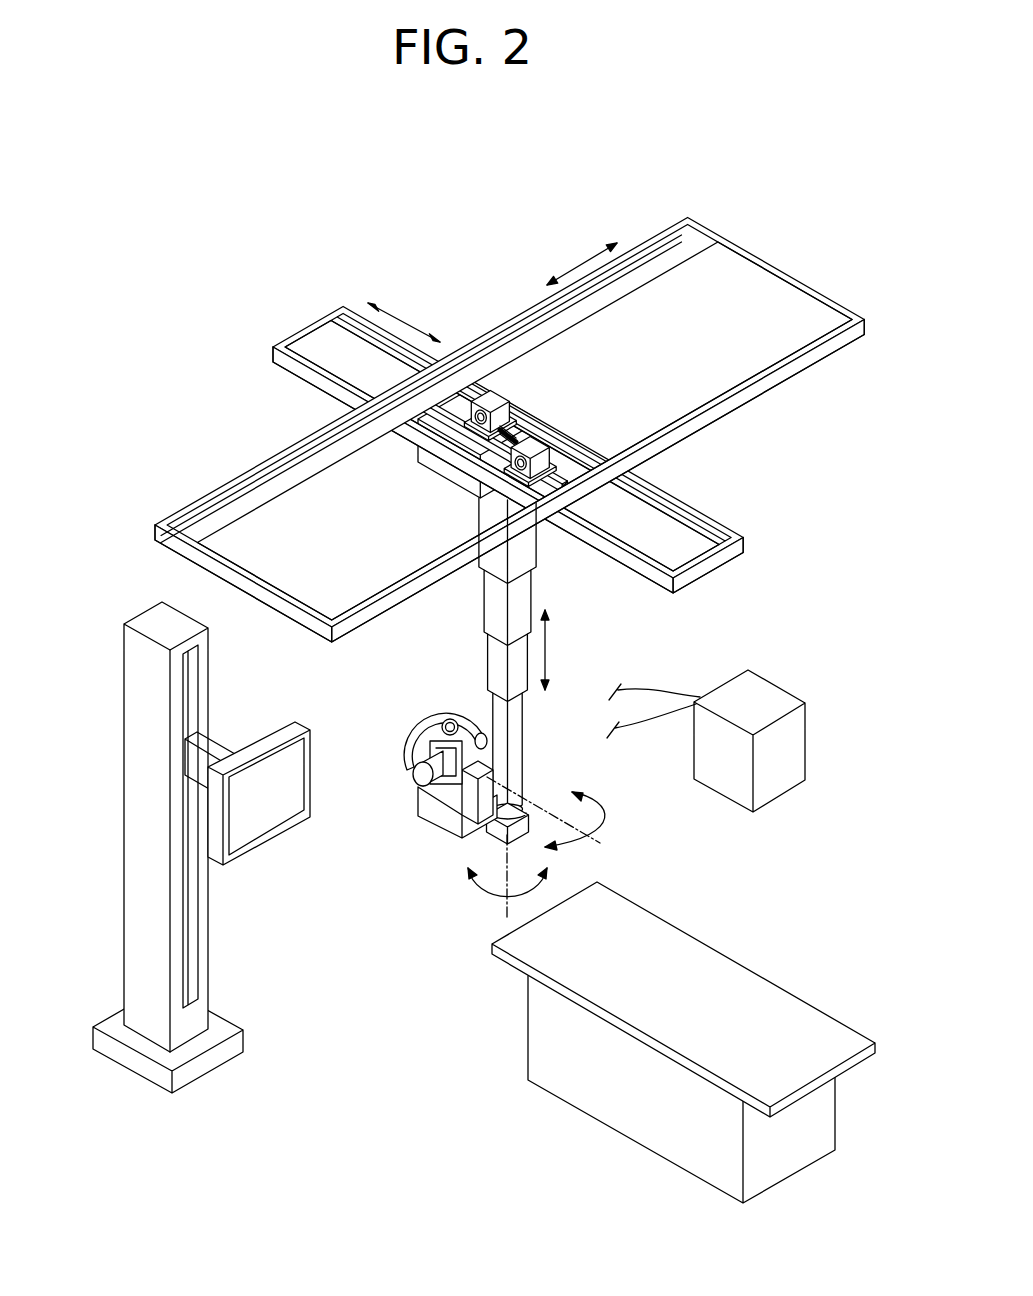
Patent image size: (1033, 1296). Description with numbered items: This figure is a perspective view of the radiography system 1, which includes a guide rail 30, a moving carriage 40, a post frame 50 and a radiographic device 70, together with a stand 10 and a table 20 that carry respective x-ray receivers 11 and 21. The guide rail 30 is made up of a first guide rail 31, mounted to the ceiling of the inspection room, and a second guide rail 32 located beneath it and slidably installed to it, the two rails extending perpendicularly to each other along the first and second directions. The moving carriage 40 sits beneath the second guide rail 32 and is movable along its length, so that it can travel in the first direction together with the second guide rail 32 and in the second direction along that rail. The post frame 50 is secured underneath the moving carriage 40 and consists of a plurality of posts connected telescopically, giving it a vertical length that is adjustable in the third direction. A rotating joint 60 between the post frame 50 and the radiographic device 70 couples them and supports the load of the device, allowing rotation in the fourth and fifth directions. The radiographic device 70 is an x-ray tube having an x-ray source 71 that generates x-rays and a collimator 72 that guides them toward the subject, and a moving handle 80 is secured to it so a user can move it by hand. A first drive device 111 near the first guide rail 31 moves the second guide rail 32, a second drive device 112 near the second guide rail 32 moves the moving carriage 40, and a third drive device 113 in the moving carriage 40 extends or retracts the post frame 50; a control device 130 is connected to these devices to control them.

The radiography system 1 is at (466, 173).
The stand 10 is at (184, 847).
The x-ray receiver 11 is at (262, 822).
The table 20 is at (683, 1035).
The x-ray receiver 21 is at (768, 987).
The guide rail 30 is at (509, 430).
The first guide rail 31 is at (693, 428).
The second guide rail 32 is at (697, 510).
The moving carriage 40 is at (437, 476).
The post frame 50 is at (490, 605).
The rotating joint 60 is at (490, 808).
The radiographic device 70 is at (428, 745).
The x-ray source 71 is at (422, 780).
The collimator 72 is at (438, 798).
The moving handle 80 is at (420, 742).
The first drive device 111 is at (445, 372).
The second drive device 112 is at (505, 393).
The third drive device 113 is at (537, 450).
The control device 130 is at (778, 697).